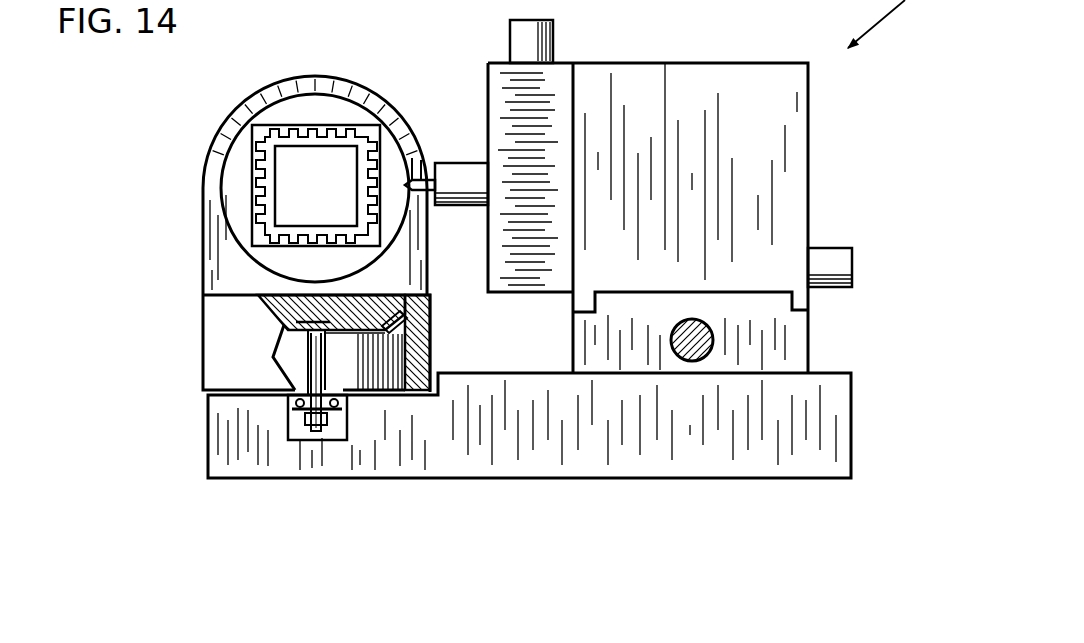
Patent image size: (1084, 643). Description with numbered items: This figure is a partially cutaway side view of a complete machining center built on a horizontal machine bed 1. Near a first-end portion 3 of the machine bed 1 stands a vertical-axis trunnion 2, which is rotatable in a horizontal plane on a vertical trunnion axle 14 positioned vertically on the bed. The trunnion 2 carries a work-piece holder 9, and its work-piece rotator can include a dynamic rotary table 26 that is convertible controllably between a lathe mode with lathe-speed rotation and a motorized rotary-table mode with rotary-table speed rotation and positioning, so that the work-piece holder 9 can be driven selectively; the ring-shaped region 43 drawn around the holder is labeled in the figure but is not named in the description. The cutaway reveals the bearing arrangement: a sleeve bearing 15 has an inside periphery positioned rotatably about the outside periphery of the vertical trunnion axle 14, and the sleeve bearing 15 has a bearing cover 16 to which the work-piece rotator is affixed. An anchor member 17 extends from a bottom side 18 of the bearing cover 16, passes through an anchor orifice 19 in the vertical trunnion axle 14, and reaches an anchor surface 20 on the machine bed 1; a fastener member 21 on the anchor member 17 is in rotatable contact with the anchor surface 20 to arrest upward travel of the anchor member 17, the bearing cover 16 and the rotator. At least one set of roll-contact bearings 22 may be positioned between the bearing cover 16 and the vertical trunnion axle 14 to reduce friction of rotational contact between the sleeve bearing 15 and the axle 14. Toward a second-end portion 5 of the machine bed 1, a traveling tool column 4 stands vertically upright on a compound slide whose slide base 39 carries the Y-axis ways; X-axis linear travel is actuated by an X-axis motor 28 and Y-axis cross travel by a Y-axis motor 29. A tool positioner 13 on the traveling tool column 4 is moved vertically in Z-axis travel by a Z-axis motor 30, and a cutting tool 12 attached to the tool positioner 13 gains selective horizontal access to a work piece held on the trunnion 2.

The horizontal machine bed 1 is at (420, 455).
The vertical-axis trunnion 2 is at (190, 276).
The first-end portion 3 is at (210, 440).
The traveling tool column 4 is at (488, 63).
The second-end portion 5 is at (855, 440).
The work-piece holder 9 is at (215, 192).
The cutting tool 12 is at (413, 200).
The tool positioner 13 is at (447, 170).
The vertical trunnion axle 14 is at (350, 373).
The sleeve bearing 15 is at (420, 342).
The bearing cover 16 is at (335, 305).
The anchor member 17 is at (313, 352).
The bottom side 18 is at (300, 323).
The anchor orifice 19 is at (305, 376).
The anchor surface 20 is at (298, 406).
The fastener member 21 is at (318, 428).
The roll-contact bearings 22 is at (400, 320).
The dynamic rotary table 26 is at (318, 78).
The X-axis motor 28 is at (683, 342).
The Y-axis motor 29 is at (835, 262).
The Z-axis motor 30 is at (540, 38).
The slide base 39 is at (765, 342).
The bore 43 is at (238, 117).